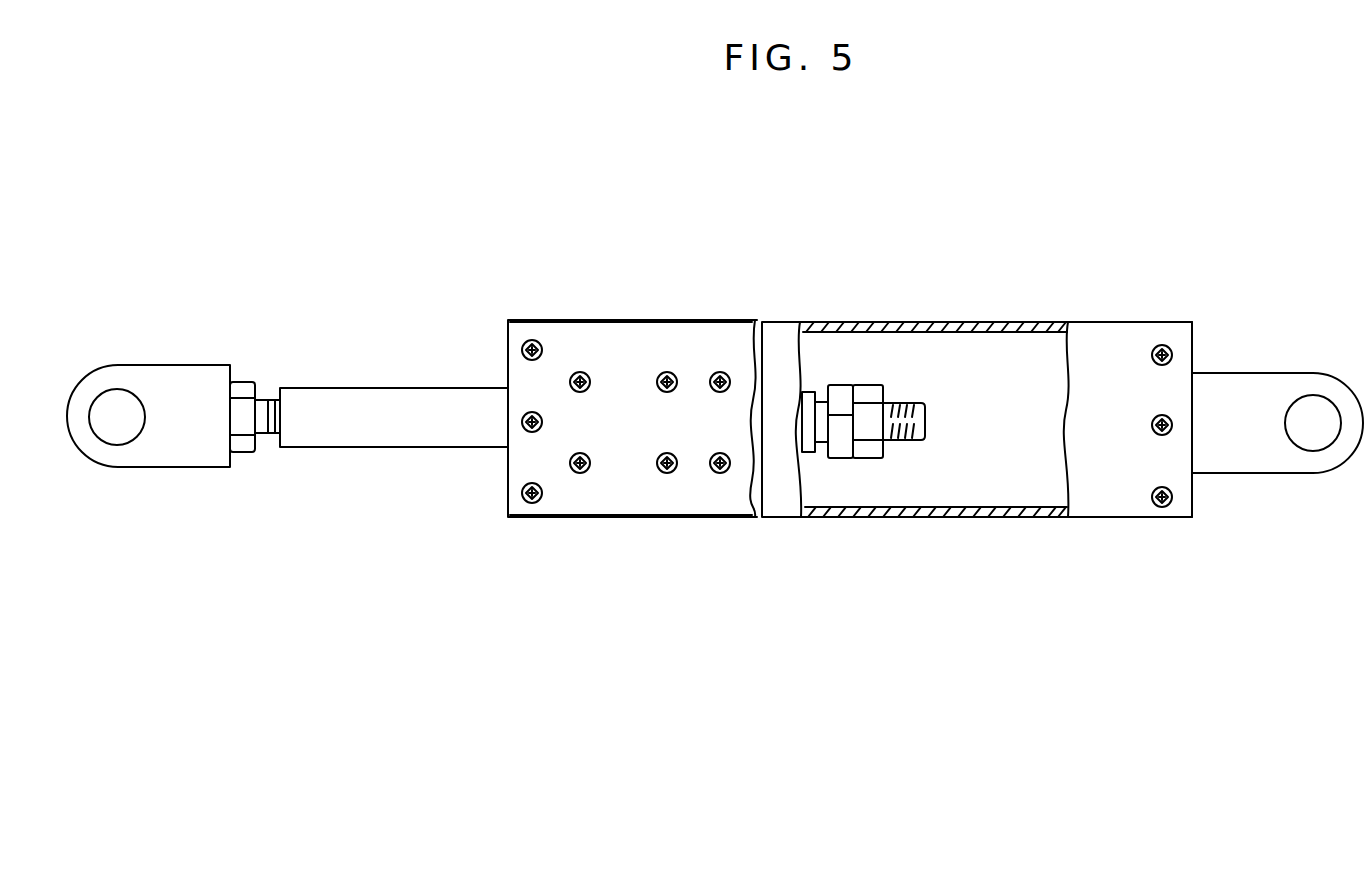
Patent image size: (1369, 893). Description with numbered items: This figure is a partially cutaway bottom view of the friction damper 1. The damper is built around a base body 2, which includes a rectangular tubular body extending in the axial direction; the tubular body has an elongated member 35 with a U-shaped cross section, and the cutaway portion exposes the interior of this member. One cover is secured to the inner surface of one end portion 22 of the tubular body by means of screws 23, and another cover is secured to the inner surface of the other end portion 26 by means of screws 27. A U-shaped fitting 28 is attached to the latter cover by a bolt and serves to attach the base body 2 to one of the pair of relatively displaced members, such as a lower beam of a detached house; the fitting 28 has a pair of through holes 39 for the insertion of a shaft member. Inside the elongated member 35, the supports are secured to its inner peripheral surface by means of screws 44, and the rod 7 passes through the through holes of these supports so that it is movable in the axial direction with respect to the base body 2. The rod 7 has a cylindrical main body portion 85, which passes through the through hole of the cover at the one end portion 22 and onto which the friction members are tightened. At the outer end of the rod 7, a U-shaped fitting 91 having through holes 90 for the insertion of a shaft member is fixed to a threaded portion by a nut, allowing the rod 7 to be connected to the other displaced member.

The friction damper 1 is at (622, 305).
The base body 2 is at (882, 322).
The rod 7 is at (452, 388).
The one end portion 22 is at (528, 517).
The screws 23 is at (532, 340).
The other end portion 26 is at (1180, 510).
The screws 27 is at (1162, 345).
The U-shaped fitting 28 is at (1232, 383).
The elongated member 35 is at (628, 472).
The through holes 39 is at (1312, 410).
The screws 44 is at (720, 372).
The cylindrical main body portion 85 is at (392, 427).
The through holes 90 is at (117, 415).
The U-shaped fitting 91 is at (181, 438).